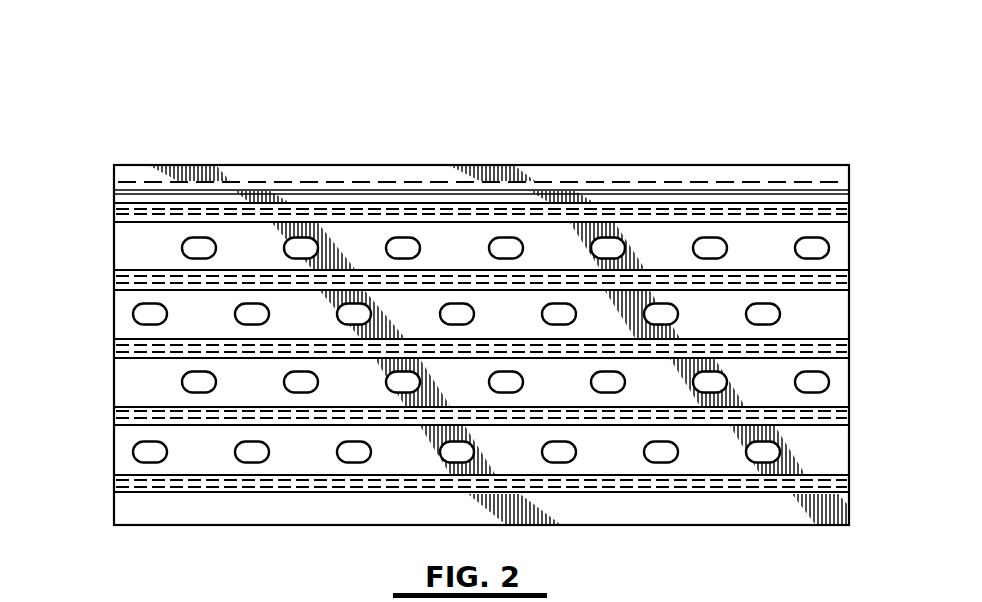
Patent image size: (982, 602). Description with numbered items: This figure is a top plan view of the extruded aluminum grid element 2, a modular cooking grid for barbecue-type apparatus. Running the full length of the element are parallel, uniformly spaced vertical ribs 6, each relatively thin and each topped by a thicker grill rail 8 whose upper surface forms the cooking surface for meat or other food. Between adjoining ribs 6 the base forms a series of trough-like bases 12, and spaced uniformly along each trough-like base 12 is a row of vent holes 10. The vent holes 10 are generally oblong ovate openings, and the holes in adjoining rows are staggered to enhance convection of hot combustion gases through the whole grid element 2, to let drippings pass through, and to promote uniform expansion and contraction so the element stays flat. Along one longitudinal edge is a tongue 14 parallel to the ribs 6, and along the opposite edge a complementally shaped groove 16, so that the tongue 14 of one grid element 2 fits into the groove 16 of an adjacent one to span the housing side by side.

The grid element 2 is at (575, 118).
The vertical ribs 6 is at (474, 209).
The grill rail 8 is at (121, 212).
The vent holes 10 is at (192, 247).
The trough-like bases 12 is at (143, 375).
The tongue 14 is at (657, 524).
The groove 16 is at (672, 166).